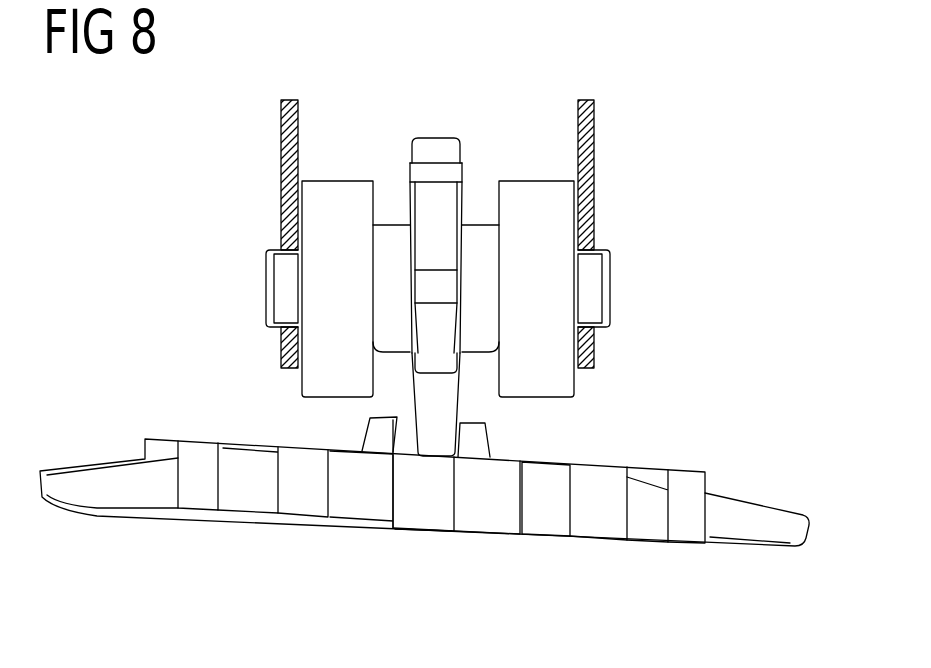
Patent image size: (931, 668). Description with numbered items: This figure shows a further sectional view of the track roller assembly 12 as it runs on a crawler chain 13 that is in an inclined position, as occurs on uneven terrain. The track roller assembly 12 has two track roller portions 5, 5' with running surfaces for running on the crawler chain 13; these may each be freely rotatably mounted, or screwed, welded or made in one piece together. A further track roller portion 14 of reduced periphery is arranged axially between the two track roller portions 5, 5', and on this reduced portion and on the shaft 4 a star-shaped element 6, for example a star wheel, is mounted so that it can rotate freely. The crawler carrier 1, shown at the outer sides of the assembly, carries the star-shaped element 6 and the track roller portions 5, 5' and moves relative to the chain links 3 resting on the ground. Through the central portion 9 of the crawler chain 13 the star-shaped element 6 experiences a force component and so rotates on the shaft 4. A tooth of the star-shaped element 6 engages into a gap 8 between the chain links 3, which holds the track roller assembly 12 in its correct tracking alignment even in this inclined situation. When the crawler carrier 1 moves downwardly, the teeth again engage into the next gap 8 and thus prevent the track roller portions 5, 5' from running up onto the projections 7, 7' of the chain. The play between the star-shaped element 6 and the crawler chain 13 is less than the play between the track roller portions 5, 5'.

The crawler carrier 1 is at (283, 137).
The chain links 3 is at (592, 483).
The shaft 4 is at (283, 289).
The track roller portion 5 is at (337, 252).
The track roller portion 5' is at (536, 252).
The star-shaped element 6 is at (446, 150).
The projection 7 is at (502, 433).
The projection 7' is at (355, 426).
The gap 8 is at (432, 517).
The central portion 9 is at (425, 475).
The track roller assembly 12 is at (644, 168).
The crawler chain 13 is at (753, 469).
The track roller portion of reduced periphery 14 is at (481, 220).